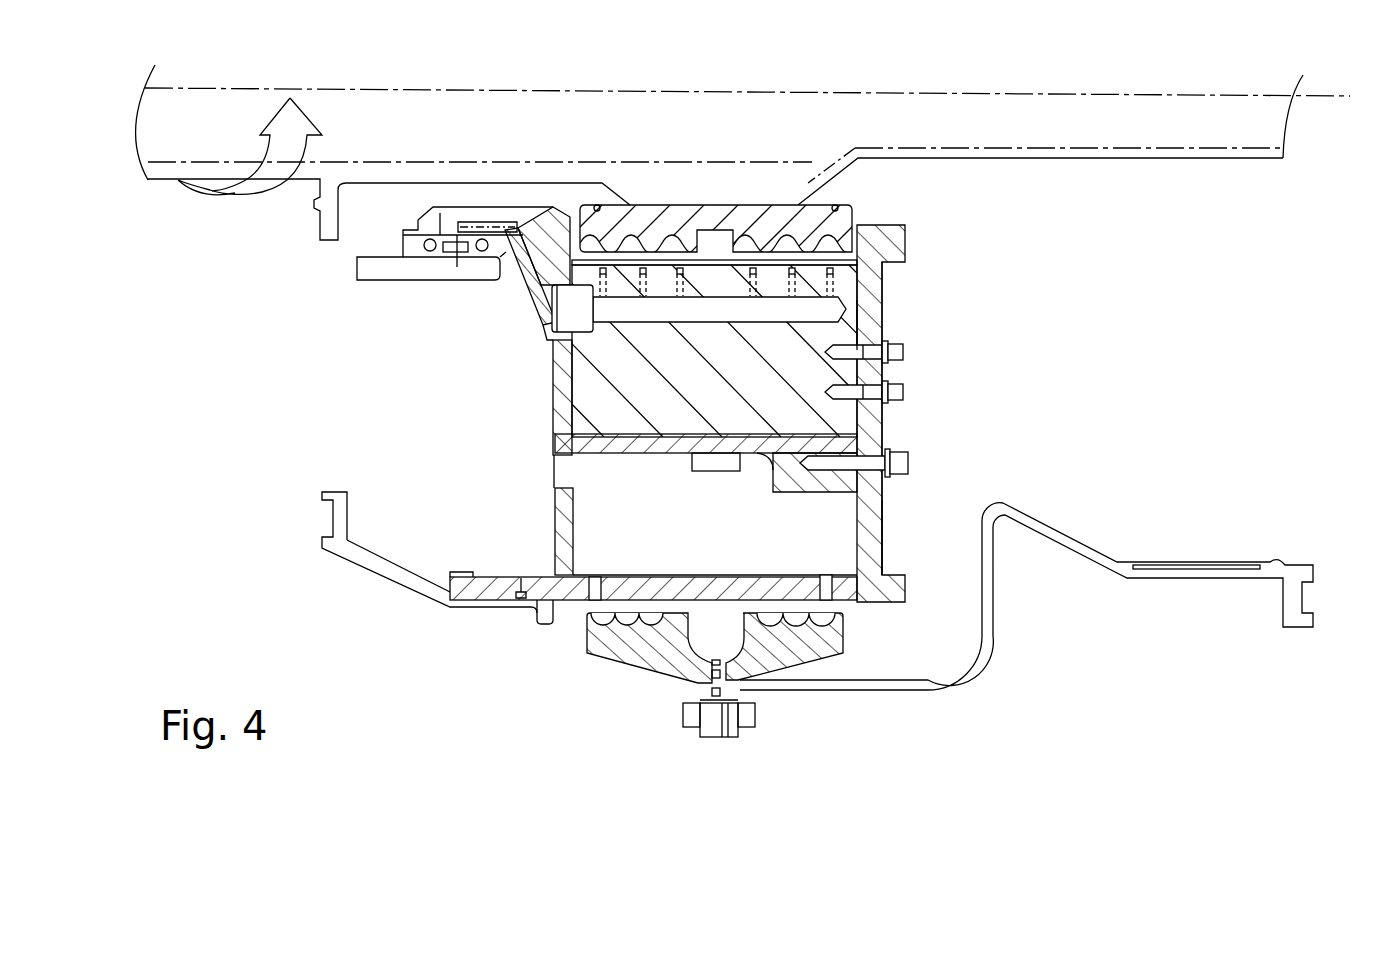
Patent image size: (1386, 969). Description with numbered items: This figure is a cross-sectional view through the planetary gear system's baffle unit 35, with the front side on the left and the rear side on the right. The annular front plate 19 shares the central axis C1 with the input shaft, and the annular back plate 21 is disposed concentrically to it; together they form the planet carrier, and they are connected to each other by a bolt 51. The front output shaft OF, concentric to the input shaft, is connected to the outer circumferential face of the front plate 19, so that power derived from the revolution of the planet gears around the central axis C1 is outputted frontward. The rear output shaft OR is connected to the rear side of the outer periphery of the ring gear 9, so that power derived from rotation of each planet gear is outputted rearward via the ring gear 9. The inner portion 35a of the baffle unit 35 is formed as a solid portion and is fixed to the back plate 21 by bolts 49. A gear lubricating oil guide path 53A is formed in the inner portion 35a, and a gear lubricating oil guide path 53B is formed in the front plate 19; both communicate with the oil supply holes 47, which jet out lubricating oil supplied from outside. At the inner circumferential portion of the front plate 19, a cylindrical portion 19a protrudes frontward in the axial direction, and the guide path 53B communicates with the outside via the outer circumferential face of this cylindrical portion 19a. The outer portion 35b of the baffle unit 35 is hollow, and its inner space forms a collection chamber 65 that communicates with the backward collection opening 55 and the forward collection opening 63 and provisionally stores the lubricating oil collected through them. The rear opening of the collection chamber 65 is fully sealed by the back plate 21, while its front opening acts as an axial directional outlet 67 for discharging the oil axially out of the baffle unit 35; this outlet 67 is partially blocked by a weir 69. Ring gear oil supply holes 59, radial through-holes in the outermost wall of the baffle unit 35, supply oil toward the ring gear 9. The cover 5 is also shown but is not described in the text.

The cover 5 is at (855, 210).
The oil supply holes 47 is at (843, 283).
The back plate 21 is at (893, 298).
The inner portion 35a is at (835, 333).
The bolts 49 is at (905, 392).
The baffle unit 35 is at (957, 413).
The bolt 51 is at (908, 463).
The outer portion 35b is at (887, 540).
The cylindrical portion 19a is at (520, 288).
The gear lubricating oil guide path 53A is at (548, 300).
The gear lubricating oil guide path 53B is at (703, 313).
The front plate 19 is at (553, 402).
The axial directional outlet 67 is at (690, 462).
The backward collection opening 55 is at (622, 467).
The forward collection opening 63 is at (673, 460).
The weir 69 is at (556, 538).
The collection chamber 65 is at (714, 528).
The ring gear oil supply holes 59 is at (590, 603).
The ring gear 9 is at (583, 647).
The front output shaft OF is at (378, 567).
The rear output shaft OR is at (980, 670).
The central axis C1 is at (1333, 96).